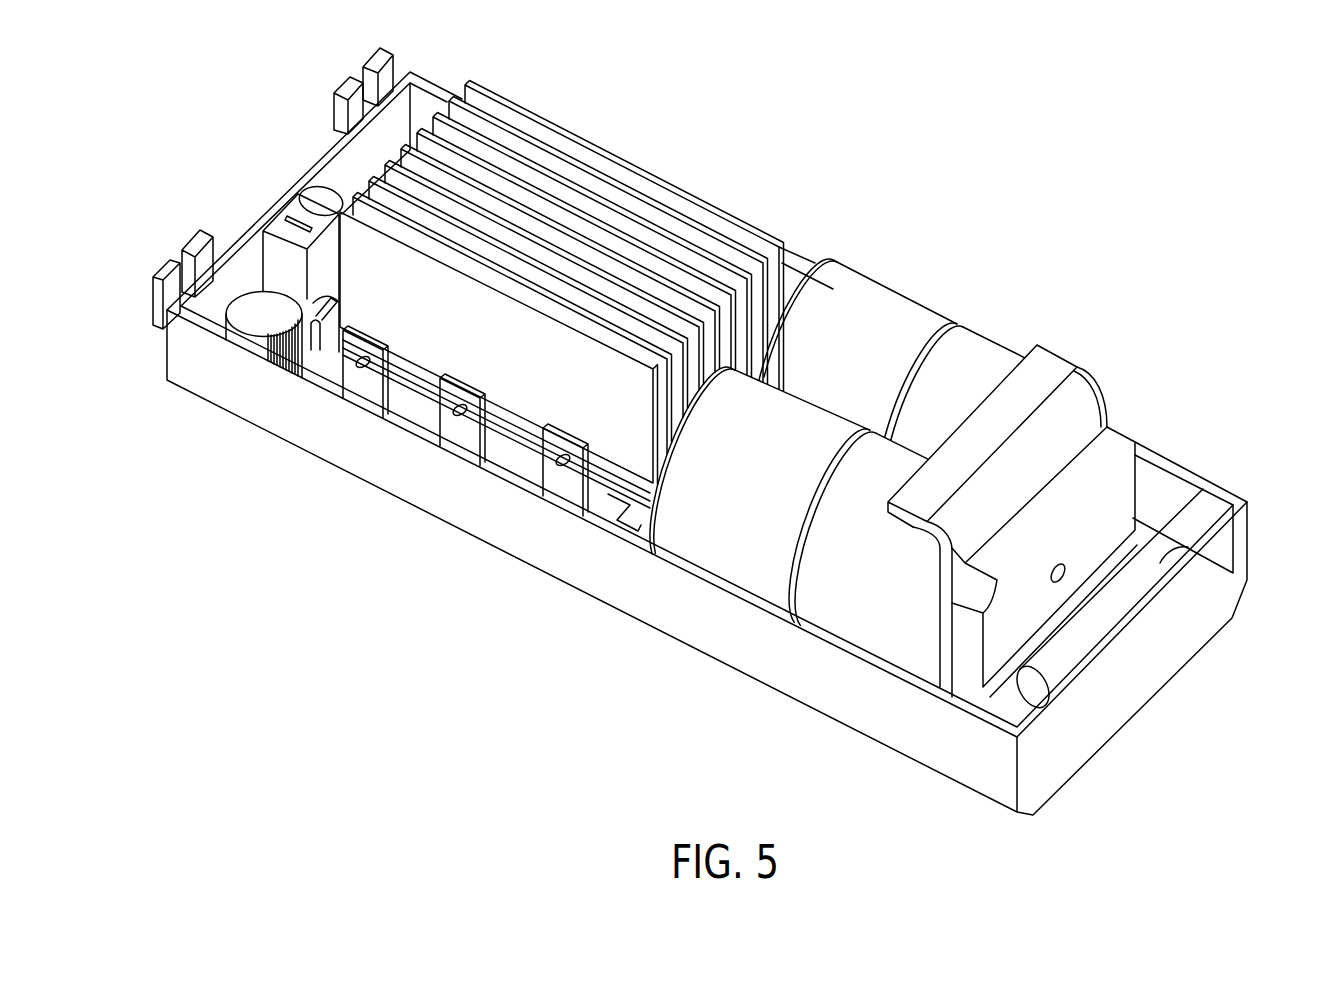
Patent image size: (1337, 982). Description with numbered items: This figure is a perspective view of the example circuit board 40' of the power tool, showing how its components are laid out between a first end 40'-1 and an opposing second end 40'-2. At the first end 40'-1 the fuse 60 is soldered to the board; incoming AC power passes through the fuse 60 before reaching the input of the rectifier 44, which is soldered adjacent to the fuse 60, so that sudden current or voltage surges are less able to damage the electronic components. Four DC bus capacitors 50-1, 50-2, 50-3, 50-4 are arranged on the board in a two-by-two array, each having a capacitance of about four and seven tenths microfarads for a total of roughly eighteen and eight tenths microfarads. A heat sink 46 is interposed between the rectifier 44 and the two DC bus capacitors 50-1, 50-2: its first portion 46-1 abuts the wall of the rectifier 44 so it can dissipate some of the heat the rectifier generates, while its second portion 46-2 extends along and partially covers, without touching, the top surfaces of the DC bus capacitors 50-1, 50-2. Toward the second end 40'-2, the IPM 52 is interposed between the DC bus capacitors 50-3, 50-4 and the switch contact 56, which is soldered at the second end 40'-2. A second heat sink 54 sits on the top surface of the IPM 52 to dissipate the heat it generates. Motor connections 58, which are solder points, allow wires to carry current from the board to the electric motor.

The circuit board 40' is at (707, 405).
The first end 40'-1 is at (731, 443).
The second end 40'-2 is at (268, 188).
The rectifier 44 is at (1115, 455).
The heat sink 46 is at (1008, 496).
The first portion 46-1 is at (1093, 410).
The second portion 46-2 is at (1037, 363).
The DC bus capacitor 50-1 is at (976, 347).
The DC bus capacitor 50-2 is at (833, 602).
The DC bus capacitor 50-3 is at (881, 305).
The DC bus capacitor 50-4 is at (725, 555).
The IPM 52 is at (502, 452).
The heat sink 54 is at (630, 176).
The switch contact 56 is at (316, 196).
The motor connections 58 is at (363, 368).
The fuse 60 is at (1145, 563).